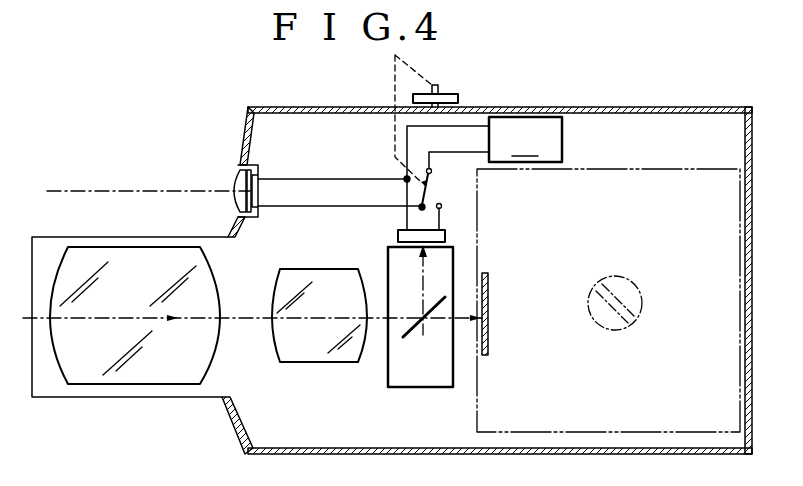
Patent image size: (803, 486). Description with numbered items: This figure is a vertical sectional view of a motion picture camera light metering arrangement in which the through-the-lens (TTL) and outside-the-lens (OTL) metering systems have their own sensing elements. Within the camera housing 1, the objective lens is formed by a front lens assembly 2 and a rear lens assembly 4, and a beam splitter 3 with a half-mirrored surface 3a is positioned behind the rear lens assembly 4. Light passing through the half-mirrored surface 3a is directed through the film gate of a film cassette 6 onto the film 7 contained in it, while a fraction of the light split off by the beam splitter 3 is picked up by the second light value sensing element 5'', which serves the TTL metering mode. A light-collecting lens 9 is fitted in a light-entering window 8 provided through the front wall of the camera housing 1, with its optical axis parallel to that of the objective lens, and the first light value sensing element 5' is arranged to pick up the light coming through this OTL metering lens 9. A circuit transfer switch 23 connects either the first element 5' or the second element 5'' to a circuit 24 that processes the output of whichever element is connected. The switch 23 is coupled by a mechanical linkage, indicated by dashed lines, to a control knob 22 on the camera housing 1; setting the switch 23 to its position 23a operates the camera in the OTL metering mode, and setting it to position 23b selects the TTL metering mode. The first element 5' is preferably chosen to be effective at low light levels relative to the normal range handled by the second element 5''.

The camera housing 1 is at (619, 107).
The front lens assembly 2 is at (137, 385).
The beam splitter 3 is at (402, 387).
The half-mirrored surface 3a is at (423, 342).
The rear lens assembly 4 is at (320, 362).
The first light value sensing element 5' is at (339, 178).
The second light value sensing element 5'' is at (438, 225).
The film cassette 6 is at (657, 185).
The film 7 is at (489, 291).
The light-entering window 8 is at (234, 180).
The light-collecting lens 9 is at (236, 205).
The control knob 22 is at (442, 90).
The circuit transfer switch 23 is at (433, 196).
The switch position for OTL mode 23a is at (419, 208).
The switch position for TTL mode 23b is at (442, 204).
The circuit 24 is at (484, 173).